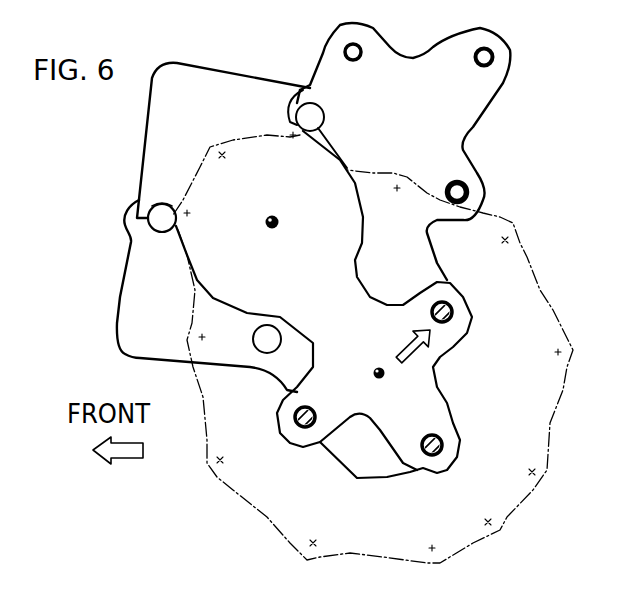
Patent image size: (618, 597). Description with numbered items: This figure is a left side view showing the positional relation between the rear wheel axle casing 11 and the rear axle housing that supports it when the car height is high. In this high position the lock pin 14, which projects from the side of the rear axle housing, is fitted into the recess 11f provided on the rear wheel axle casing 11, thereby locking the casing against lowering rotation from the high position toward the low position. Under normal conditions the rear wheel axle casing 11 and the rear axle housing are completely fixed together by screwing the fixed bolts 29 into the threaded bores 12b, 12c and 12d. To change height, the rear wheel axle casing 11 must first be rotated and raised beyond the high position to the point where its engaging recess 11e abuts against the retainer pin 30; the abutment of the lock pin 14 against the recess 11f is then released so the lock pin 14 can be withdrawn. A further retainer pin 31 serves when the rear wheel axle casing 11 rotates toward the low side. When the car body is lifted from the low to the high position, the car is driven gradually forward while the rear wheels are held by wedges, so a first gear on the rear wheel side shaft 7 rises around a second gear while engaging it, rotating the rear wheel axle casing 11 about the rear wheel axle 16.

The rear wheel axle casing 11 is at (182, 63).
The engaging recess 11e is at (288, 106).
The recess 11f is at (159, 205).
The lock pin 14 is at (163, 233).
The rear wheel side shaft 7 is at (274, 229).
The threaded bore 12b is at (360, 59).
The threaded bore 12c is at (496, 57).
The threaded bore 12d is at (491, 191).
The retainer pin 30 is at (325, 120).
The retainer pin 31 is at (272, 353).
The fixed bolt 29 is at (454, 308).
The rear wheel axle 16 is at (343, 250).